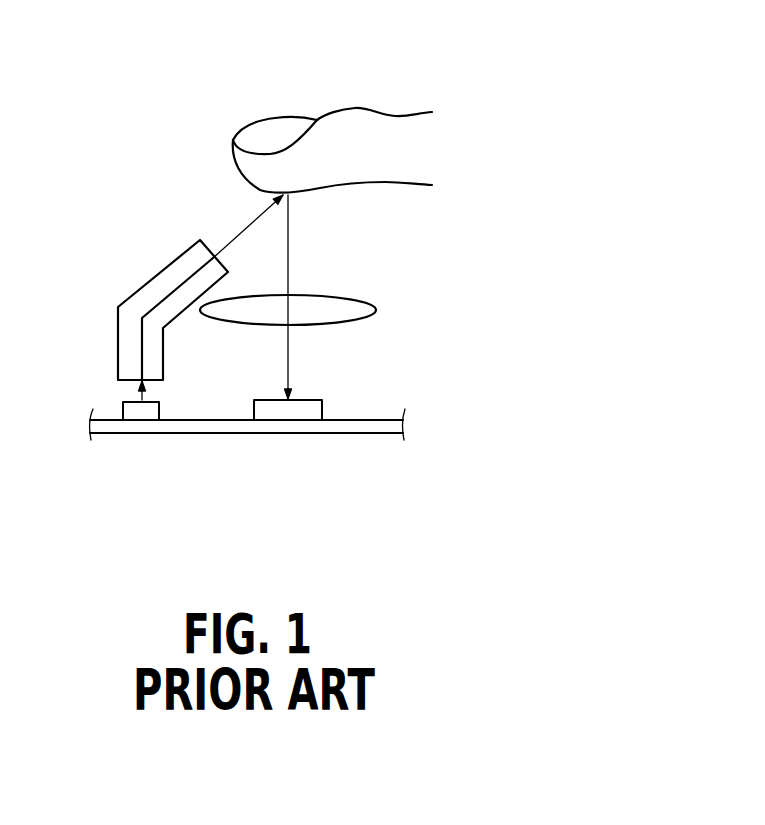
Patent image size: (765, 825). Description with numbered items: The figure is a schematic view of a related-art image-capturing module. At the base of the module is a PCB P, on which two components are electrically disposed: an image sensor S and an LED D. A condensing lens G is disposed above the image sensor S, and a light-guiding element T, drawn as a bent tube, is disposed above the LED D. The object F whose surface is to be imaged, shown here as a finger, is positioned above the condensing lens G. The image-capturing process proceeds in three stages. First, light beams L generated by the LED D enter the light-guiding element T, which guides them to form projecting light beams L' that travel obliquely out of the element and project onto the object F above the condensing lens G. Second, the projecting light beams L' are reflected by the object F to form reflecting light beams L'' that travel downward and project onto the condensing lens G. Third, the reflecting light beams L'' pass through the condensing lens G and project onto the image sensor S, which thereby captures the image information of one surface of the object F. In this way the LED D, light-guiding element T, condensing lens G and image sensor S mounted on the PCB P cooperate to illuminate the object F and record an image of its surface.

The object F is at (367, 107).
The light-guiding element T is at (118, 332).
The light beams L is at (102, 393).
The projecting light beams L' is at (223, 224).
The reflecting light beams L'' is at (341, 297).
The condensing lens G is at (357, 298).
The LED D is at (135, 418).
The image sensor S is at (297, 414).
The PCB P is at (373, 435).